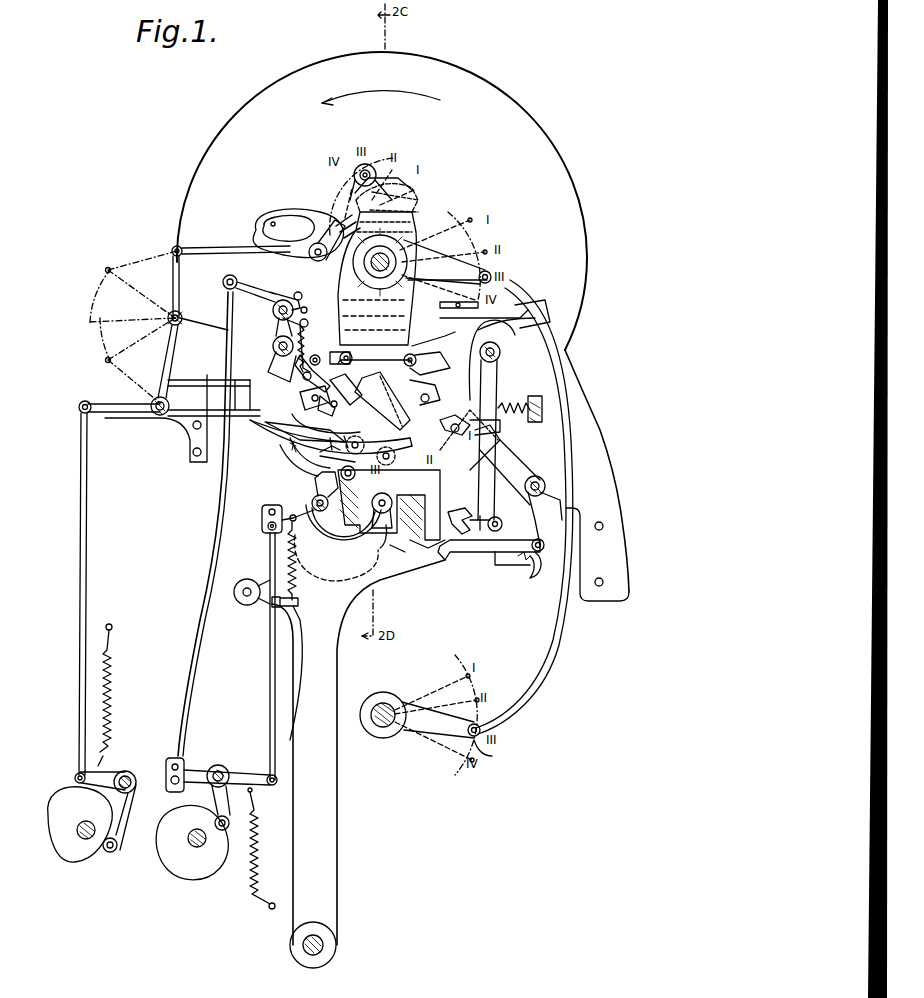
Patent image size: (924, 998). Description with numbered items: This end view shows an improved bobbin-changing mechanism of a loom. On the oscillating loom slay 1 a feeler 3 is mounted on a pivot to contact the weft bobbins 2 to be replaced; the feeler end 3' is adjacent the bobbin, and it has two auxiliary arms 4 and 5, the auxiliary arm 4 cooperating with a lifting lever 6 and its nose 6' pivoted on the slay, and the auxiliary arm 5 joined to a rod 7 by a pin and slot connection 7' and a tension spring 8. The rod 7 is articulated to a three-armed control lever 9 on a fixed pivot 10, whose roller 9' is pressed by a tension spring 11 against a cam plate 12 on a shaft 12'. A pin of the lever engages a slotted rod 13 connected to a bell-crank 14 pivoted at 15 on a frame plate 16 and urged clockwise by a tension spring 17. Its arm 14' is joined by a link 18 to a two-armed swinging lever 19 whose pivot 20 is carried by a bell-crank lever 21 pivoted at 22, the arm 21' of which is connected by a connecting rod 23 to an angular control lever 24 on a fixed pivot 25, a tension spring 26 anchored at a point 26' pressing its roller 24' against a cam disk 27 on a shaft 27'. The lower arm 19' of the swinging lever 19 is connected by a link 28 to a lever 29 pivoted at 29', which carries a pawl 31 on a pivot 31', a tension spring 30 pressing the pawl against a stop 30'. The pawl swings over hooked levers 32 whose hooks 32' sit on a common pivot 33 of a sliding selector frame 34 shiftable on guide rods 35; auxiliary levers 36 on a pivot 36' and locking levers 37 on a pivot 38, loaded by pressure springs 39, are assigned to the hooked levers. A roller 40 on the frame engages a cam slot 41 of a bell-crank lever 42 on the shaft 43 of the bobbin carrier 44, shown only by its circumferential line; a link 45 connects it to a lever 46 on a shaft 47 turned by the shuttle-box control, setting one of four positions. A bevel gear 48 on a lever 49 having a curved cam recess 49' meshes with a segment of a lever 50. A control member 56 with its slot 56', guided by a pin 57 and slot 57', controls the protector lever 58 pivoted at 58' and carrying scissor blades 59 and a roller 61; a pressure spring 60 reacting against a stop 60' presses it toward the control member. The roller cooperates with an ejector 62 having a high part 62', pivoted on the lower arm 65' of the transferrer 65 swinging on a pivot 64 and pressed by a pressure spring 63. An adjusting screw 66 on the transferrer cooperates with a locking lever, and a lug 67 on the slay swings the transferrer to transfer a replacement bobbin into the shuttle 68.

The loom slay 1 is at (335, 810).
The weft bobbin 2 is at (384, 496).
The feeler 3 is at (337, 555).
The lever end 3' is at (386, 540).
The auxiliary arm 4 is at (315, 482).
The auxiliary arm 5 is at (305, 530).
The lifting lever 6 is at (284, 463).
The arm 6' is at (298, 462).
The rod 7 is at (266, 649).
The pin and slot connection 7' is at (260, 518).
The tension spring 8 is at (295, 575).
The three-armed control lever 9 is at (230, 782).
The roller 9' is at (230, 841).
The fixed pivot 10 is at (220, 766).
The tension spring 11 is at (262, 850).
The cam plate 12 is at (192, 850).
The shaft 12' is at (205, 862).
The rod 13 is at (208, 578).
The bell-crank 14 is at (249, 279).
The arm 14' is at (321, 240).
The pivot 15 is at (282, 298).
The frame plate 16 is at (600, 447).
The tension spring 17 is at (312, 326).
The link 18 is at (210, 250).
The two-armed swinging lever 19 is at (194, 287).
The lower arm 19' is at (188, 356).
The pivot 20 is at (182, 314).
The bell-crank lever 21 is at (133, 303).
The arm 21' is at (131, 365).
The pivot 22 is at (160, 418).
The connecting rod 23 is at (80, 508).
The angular control lever 24 is at (107, 763).
The roller 24' is at (110, 865).
The fixed pivot 25 is at (134, 772).
The tension spring 26 is at (126, 688).
The pivot 26' is at (148, 400).
The cam disk 27 is at (71, 822).
The shaft 27' is at (66, 845).
The link 28 is at (196, 390).
The lever 29 is at (270, 359).
The pivot 29' is at (268, 318).
The tension spring 30 is at (318, 372).
The stop 30' is at (320, 377).
The pawl 31 is at (287, 398).
The pivot 31' is at (316, 407).
The hooked lever 32 is at (321, 428).
The lever 32' is at (337, 389).
The common pivot 33 is at (340, 436).
The sliding selector frame 34 is at (415, 352).
The guide rod 35 is at (340, 356).
The auxiliary lever 36 is at (386, 445).
The common pivot 36' is at (367, 454).
The locking lever 37 is at (420, 500).
The common pivot 38 is at (450, 425).
The pressure spring 39 is at (425, 388).
The roller 40 is at (383, 340).
The spring 41 is at (312, 344).
The bell-crank lever 42 is at (450, 262).
The shaft 43 is at (358, 262).
The bobbin carrier 44 is at (497, 105).
The link 45 is at (525, 292).
The lever 46 is at (490, 752).
The shaft 47 is at (386, 698).
The bevel gear 48 is at (408, 210).
The lever 49 is at (298, 220).
The curved cam recess 49' is at (289, 208).
The lever 50 is at (370, 166).
The control member 56 is at (569, 309).
The lever 56' is at (547, 325).
The pin 57 is at (459, 318).
The link 57' is at (496, 289).
The protector lever 58 is at (508, 437).
The pivot 58' is at (505, 345).
The scissor blades 59 is at (460, 508).
The pressure spring 60 is at (515, 393).
The stop 60' is at (580, 400).
The roller 61 is at (495, 520).
The ejector 62 is at (489, 563).
The high part 62' is at (504, 578).
The pressure spring 63 is at (520, 560).
The pivot 64 is at (546, 484).
The transferrer 65 is at (517, 472).
The lower arm 65' is at (570, 518).
The adjusting screw 66 is at (470, 430).
The lug 67 is at (430, 540).
The shuttle 68 is at (420, 562).